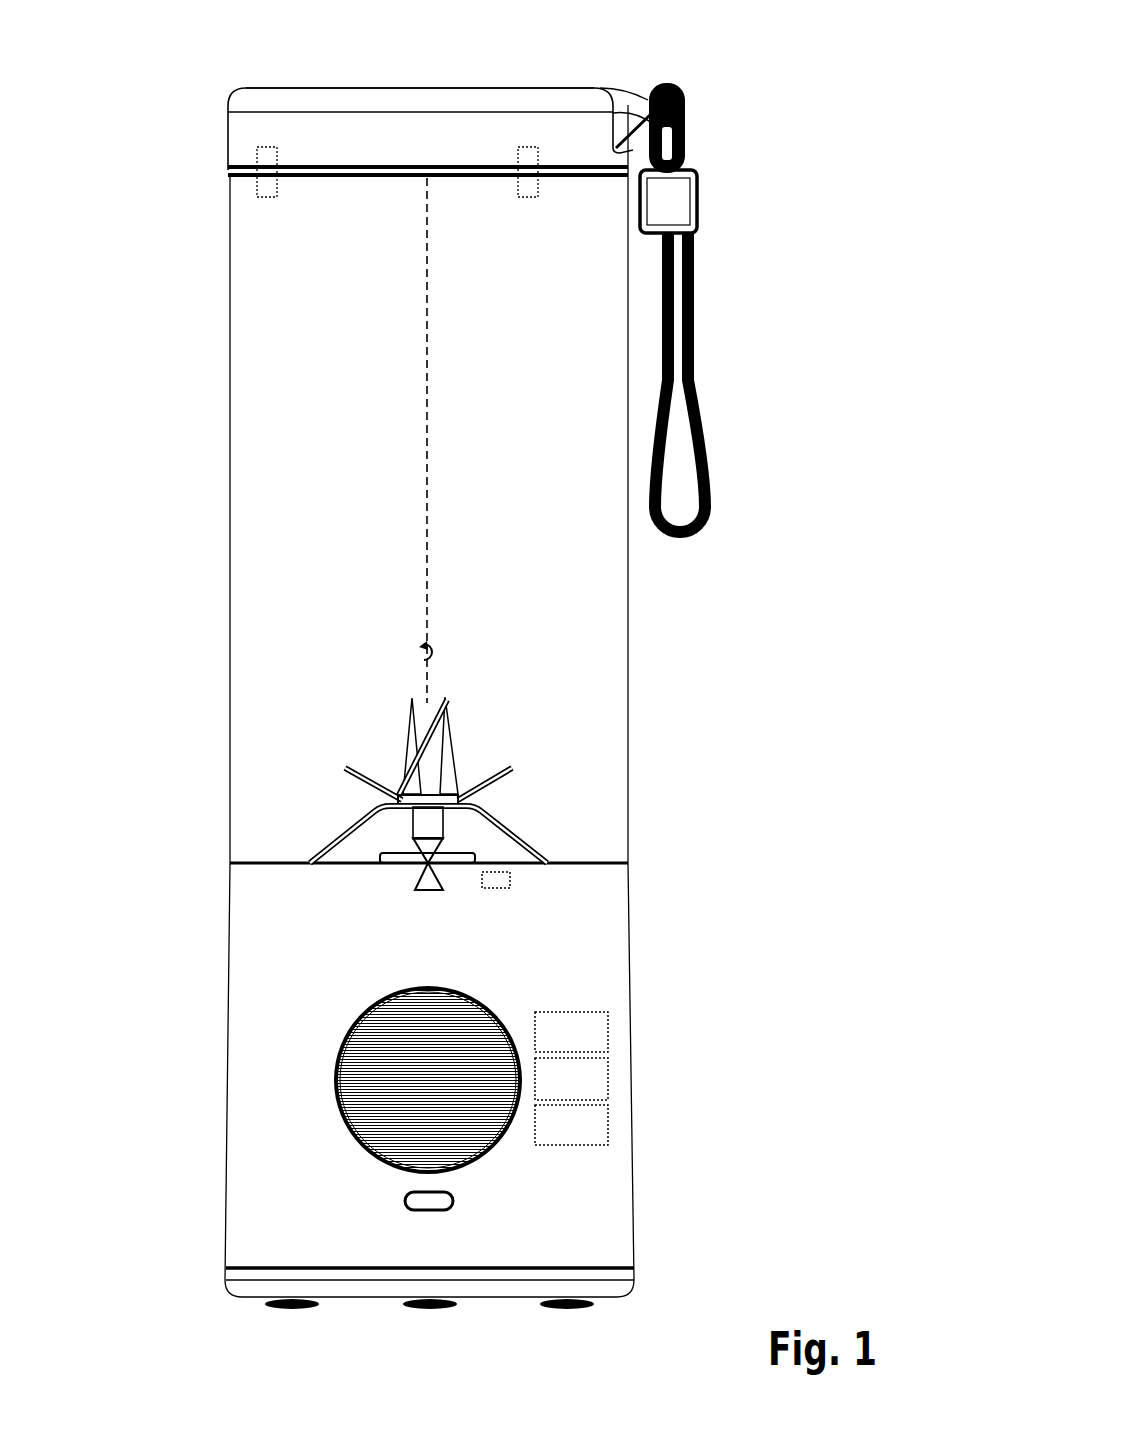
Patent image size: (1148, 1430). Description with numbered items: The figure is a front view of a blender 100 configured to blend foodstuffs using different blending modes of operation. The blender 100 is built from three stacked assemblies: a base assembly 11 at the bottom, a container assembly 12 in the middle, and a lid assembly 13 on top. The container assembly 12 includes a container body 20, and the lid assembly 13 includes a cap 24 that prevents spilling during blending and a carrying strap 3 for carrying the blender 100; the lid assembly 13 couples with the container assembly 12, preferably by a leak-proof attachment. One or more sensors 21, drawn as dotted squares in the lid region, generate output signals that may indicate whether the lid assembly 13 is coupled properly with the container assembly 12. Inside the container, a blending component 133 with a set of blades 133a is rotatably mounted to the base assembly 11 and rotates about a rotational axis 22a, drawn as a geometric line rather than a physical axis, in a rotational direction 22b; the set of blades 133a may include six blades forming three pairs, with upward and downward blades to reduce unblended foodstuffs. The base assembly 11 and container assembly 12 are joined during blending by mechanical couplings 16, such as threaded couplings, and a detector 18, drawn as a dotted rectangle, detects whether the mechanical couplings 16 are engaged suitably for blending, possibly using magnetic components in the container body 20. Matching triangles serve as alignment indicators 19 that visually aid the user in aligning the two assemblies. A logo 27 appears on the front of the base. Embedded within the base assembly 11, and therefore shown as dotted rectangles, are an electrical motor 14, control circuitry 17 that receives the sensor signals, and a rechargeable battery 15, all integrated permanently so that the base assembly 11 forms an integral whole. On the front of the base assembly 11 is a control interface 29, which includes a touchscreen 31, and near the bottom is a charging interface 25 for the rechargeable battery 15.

The blender 100 is at (804, 106).
The lid assembly 13 is at (217, 168).
The sensor(s) 21 is at (522, 186).
The cap 24 is at (468, 87).
The container assembly 12 is at (217, 171).
The container body 20 is at (583, 566).
The rotational axis 22a is at (432, 613).
The rotational direction 22b is at (437, 652).
The blending component 133 is at (513, 777).
The set of blades 133a is at (622, 752).
The carrying strap 3 is at (767, 518).
The base assembly 11 is at (217, 1313).
The mechanical couplings 16 is at (629, 864).
The detector 18 is at (510, 886).
The alignment indicators 19 is at (440, 893).
The logo 27 is at (527, 972).
The electrical motor 14 is at (608, 1025).
The control circuitry 17 is at (608, 1072).
The rechargeable battery 15 is at (608, 1120).
The control interface 29 is at (490, 1150).
The touchscreen 31 is at (442, 1143).
The charging interface 25 is at (453, 1201).